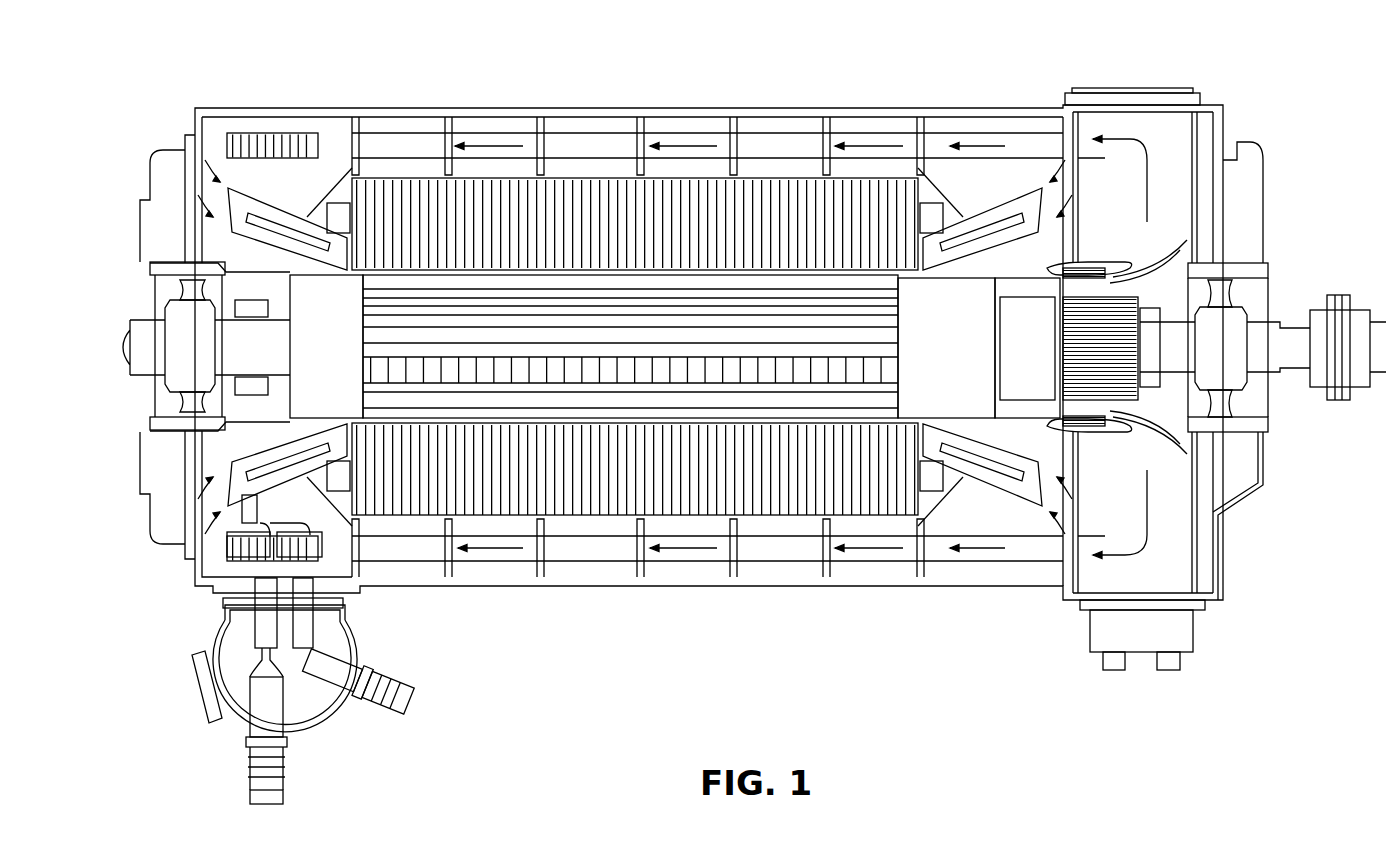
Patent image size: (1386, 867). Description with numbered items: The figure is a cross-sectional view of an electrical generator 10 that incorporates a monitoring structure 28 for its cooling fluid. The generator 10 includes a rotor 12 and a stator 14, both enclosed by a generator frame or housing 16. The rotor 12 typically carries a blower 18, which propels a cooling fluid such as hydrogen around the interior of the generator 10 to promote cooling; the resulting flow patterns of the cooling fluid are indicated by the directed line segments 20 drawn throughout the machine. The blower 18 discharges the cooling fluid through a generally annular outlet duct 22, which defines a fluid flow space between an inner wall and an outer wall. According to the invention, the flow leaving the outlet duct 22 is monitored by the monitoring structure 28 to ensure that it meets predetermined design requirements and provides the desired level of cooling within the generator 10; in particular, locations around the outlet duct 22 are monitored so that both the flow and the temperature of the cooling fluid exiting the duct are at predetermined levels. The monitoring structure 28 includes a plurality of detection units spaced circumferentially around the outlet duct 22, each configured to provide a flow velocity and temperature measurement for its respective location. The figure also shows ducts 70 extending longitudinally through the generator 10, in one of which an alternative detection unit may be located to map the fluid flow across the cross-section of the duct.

The electrical generator 10 is at (949, 88).
The rotor 12 is at (338, 356).
The stator 14 is at (590, 178).
The generator frame or housing 16 is at (604, 108).
The blower 18 is at (1105, 262).
The directed line segments 20 is at (1112, 135).
The outlet duct 22 is at (1150, 262).
The monitoring structure 28 is at (1150, 437).
The ducts 70 is at (403, 133).